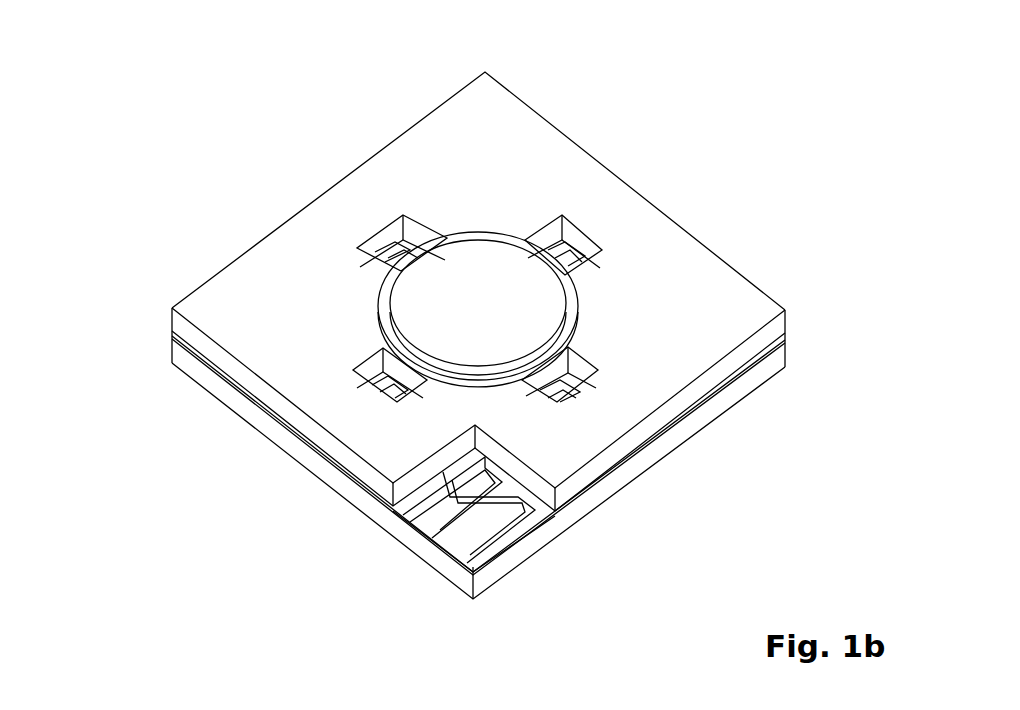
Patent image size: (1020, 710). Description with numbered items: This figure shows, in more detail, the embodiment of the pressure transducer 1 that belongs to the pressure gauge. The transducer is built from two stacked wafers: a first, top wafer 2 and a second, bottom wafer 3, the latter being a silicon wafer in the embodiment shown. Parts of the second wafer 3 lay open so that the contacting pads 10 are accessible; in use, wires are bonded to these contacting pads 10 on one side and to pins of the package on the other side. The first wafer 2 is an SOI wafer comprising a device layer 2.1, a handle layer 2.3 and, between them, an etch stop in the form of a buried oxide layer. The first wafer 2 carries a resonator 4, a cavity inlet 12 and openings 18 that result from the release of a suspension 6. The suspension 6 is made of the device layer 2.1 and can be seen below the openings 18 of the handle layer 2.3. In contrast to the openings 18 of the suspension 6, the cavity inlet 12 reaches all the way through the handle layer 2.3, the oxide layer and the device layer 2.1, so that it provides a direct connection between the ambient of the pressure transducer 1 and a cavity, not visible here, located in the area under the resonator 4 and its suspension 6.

The pressure transducer 1 is at (183, 258).
The first wafer 2 is at (528, 148).
The device layer 2.1 is at (768, 349).
The handle layer 2.3 is at (766, 336).
The second wafer 3 is at (627, 468).
The resonator 4 is at (462, 302).
The suspension 6 is at (575, 255).
The contacting pads 10 is at (455, 488).
The cavity inlet 12 is at (572, 318).
The openings 18 is at (545, 390).